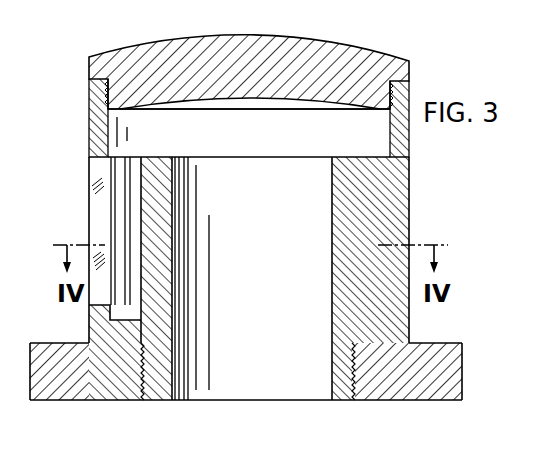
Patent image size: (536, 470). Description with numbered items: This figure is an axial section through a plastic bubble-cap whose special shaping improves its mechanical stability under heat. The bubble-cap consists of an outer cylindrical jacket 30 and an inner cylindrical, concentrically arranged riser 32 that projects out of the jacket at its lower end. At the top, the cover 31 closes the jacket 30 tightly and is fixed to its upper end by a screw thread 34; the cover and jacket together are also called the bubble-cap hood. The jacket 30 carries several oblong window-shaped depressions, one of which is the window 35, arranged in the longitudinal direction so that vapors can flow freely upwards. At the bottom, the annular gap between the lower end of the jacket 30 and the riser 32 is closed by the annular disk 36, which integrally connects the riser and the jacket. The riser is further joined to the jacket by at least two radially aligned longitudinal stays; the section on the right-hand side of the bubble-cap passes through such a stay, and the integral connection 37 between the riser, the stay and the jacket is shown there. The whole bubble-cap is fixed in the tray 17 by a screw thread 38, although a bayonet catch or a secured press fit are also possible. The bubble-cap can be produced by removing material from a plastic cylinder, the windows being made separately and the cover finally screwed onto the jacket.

The tray 17 is at (50, 402).
The cylindrical jacket 30 is at (410, 201).
The cover 31 is at (409, 67).
The riser 32 is at (158, 157).
The screw thread 34 is at (106, 101).
The oblong window-shaped depression 35 is at (94, 195).
The annular disk 36 is at (125, 335).
The integral connection 37 is at (360, 277).
The screw thread 38 is at (360, 388).